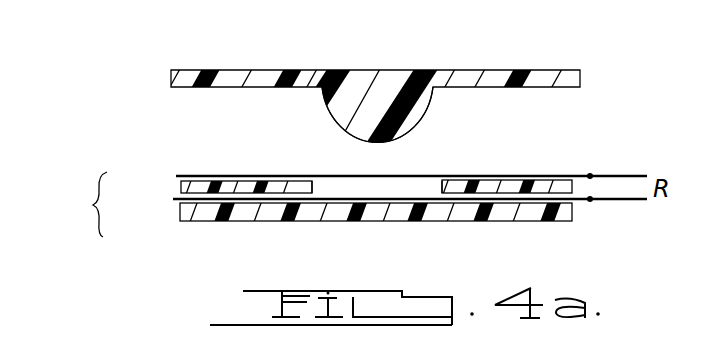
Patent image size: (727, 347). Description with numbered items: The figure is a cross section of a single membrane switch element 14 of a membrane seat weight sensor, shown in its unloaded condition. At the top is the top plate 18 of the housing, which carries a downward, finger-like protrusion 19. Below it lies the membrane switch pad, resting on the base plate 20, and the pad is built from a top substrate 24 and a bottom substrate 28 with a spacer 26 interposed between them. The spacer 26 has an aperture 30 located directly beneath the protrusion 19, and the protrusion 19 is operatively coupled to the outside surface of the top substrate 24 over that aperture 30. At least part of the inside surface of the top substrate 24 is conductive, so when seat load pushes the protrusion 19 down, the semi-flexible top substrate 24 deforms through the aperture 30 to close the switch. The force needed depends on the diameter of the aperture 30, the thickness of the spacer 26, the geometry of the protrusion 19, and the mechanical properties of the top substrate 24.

The membrane switch element 14 is at (82, 204).
The top plate 18 is at (578, 82).
The protrusion 19 is at (421, 124).
The base plate 20 is at (565, 214).
The top substrate 24 is at (215, 175).
The spacer 26 is at (185, 189).
The bottom substrate 28 is at (176, 203).
The aperture 30 is at (332, 187).